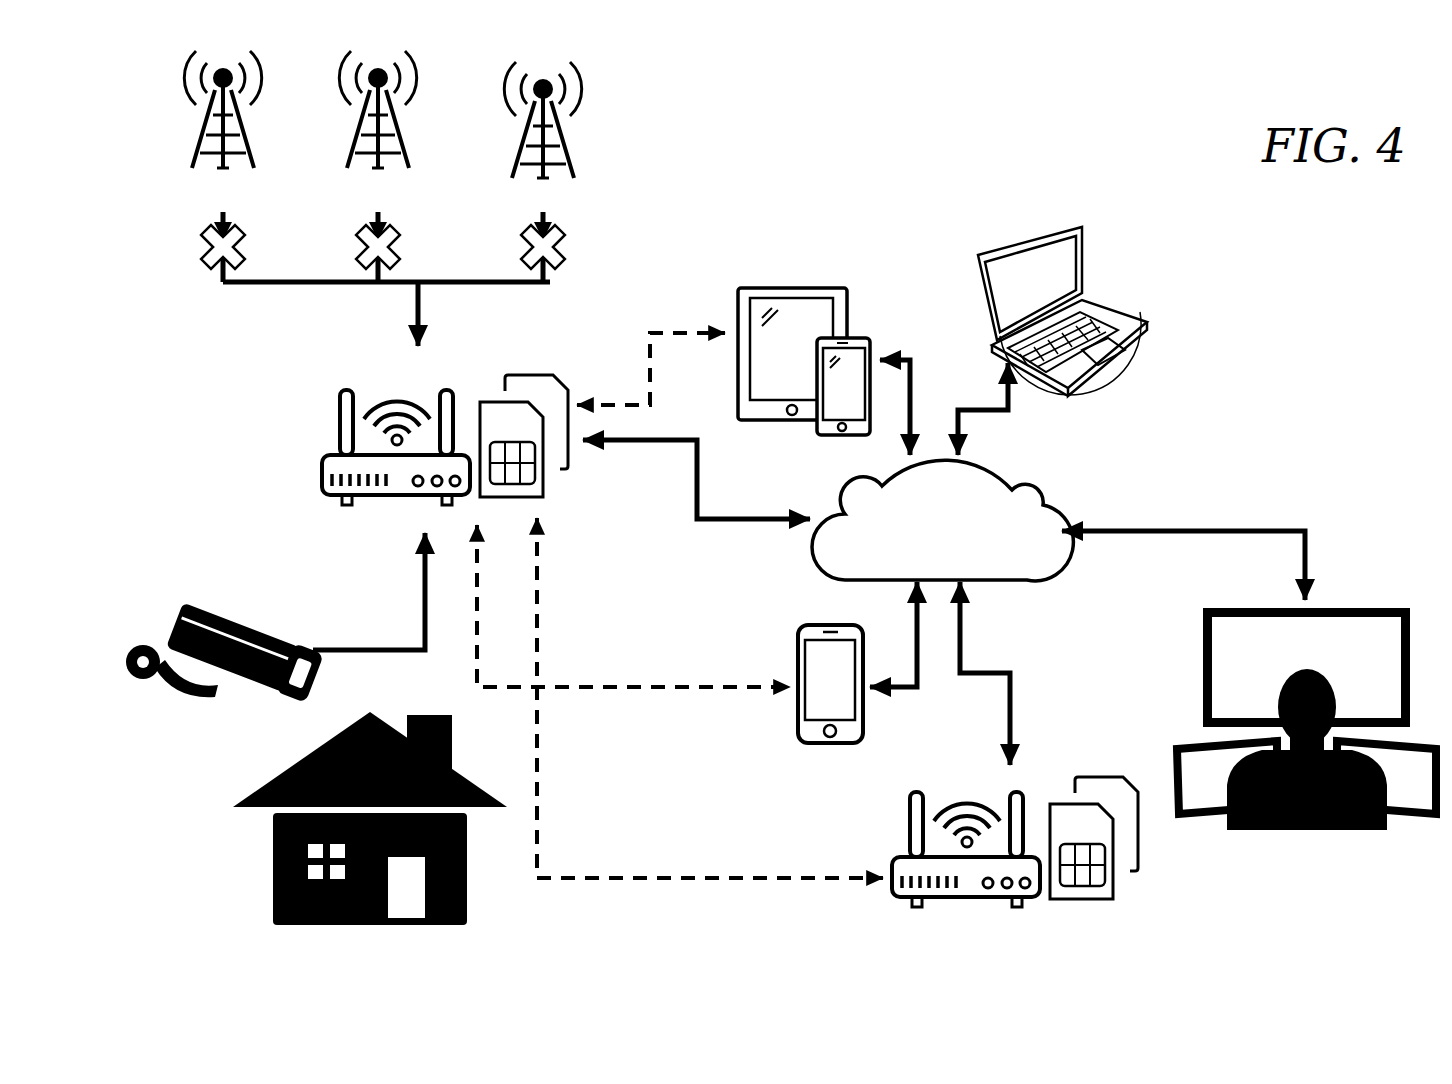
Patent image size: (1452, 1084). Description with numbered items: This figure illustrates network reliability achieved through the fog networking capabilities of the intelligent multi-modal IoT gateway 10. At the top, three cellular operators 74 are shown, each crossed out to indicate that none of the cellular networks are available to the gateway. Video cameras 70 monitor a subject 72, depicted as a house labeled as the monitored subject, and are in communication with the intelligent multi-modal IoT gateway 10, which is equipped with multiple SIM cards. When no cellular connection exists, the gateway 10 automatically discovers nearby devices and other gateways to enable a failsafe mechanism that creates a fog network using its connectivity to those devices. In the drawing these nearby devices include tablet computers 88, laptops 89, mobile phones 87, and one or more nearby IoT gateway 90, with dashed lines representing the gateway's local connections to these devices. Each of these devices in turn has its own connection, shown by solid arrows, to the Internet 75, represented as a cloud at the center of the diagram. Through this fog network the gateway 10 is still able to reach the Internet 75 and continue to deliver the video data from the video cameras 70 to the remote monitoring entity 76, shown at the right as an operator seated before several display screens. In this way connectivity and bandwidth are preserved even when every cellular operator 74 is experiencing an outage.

The cellular operator 74 is at (610, 117).
The intelligent multi-modal IoT gateway 10 is at (294, 434).
The tablet computers 88 is at (798, 284).
The laptops 89 is at (1092, 300).
The Internet 75 is at (1040, 502).
The mobile phones 87 is at (790, 667).
The video cameras 70 is at (270, 630).
The subject 72 is at (272, 905).
The IoT gateway 90 is at (892, 870).
The remote monitoring entity 76 is at (1343, 605).